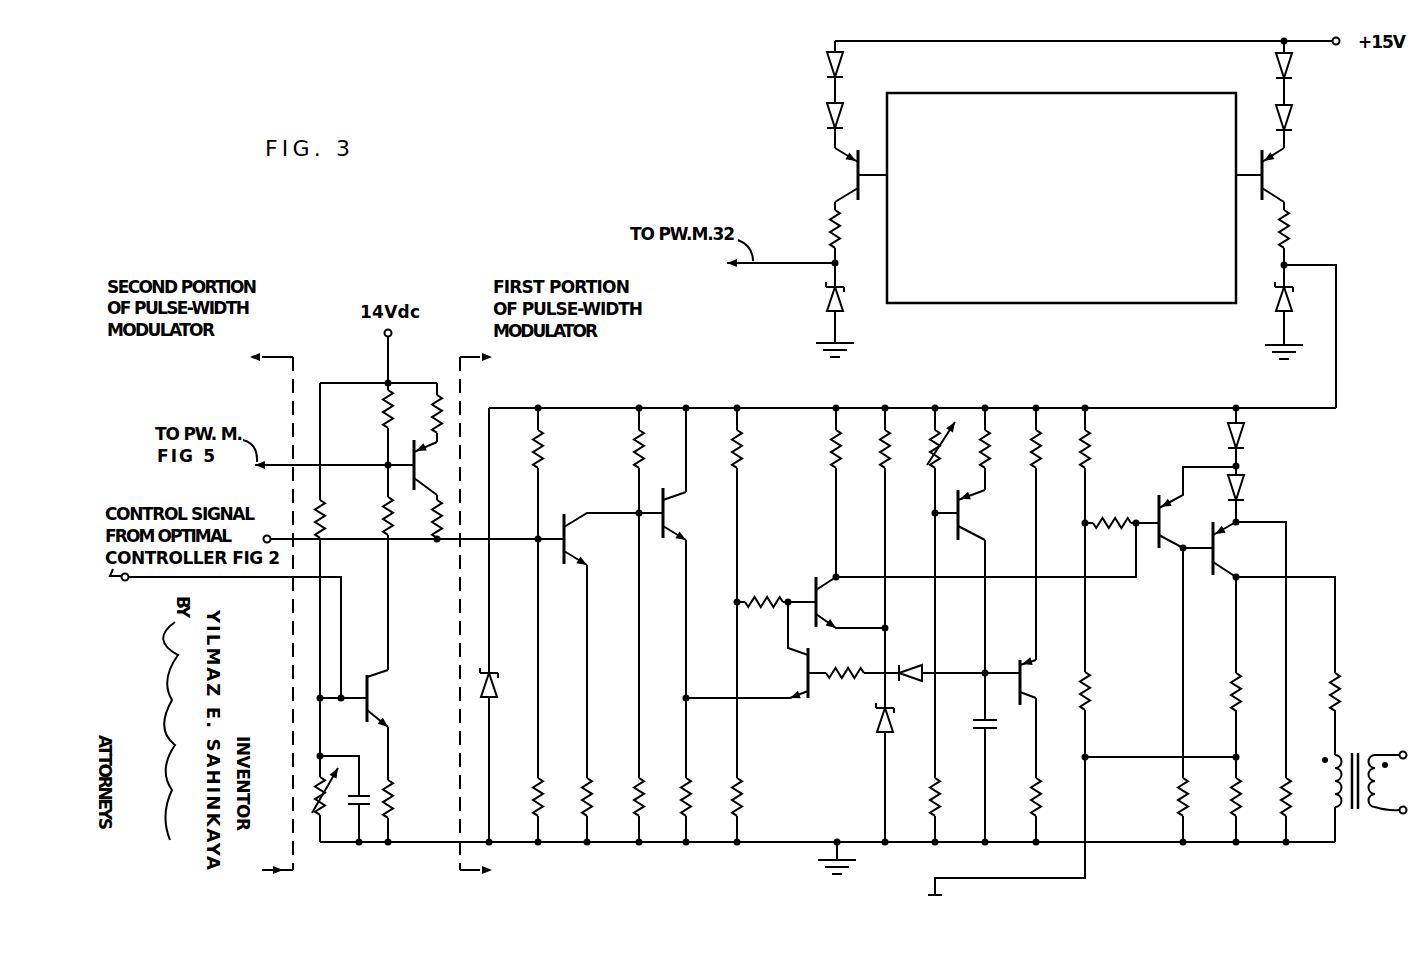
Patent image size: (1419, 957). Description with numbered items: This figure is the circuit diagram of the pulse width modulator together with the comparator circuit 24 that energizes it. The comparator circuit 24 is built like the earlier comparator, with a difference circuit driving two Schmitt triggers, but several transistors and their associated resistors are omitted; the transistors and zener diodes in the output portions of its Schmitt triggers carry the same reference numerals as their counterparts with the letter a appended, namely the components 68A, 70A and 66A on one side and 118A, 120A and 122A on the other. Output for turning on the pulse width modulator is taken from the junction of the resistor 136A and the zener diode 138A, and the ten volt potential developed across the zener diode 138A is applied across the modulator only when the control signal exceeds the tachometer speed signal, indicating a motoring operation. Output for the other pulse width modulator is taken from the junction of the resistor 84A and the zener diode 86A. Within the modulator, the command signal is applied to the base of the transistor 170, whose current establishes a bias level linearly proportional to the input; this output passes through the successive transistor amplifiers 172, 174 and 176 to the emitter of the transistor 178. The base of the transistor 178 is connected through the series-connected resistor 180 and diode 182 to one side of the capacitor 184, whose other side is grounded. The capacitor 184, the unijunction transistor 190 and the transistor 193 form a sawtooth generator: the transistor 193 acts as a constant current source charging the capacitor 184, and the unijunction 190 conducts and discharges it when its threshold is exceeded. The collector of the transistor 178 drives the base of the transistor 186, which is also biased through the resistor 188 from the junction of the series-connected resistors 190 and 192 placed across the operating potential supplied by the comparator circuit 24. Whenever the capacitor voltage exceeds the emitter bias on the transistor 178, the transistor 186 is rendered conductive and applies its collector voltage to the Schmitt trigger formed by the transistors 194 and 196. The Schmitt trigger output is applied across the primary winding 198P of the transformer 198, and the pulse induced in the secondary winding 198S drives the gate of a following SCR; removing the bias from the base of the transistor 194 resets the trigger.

The diode 68A is at (824, 58).
The diode 70A is at (824, 108).
The transistor 66A is at (850, 174).
The resistor 84A is at (828, 222).
The zener diode 86A is at (826, 292).
The diode 118A is at (1292, 60).
The diode 120A is at (1292, 110).
The transistor 122A is at (1272, 176).
The resistor 136A is at (1292, 224).
The zener diode 138A is at (1270, 303).
The comparator circuit 24 is at (1061, 198).
The transistor 170 is at (367, 756).
The transistor amplifier 172 is at (419, 467).
The transistor amplifier 174 is at (588, 540).
The transistor amplifier 176 is at (674, 515).
The transistor 178 is at (806, 675).
The resistor 180 is at (862, 660).
The diode 182 is at (918, 655).
The capacitor 184 is at (990, 736).
The transistor 186 is at (836, 604).
The resistor 188 is at (762, 583).
The unijunction transistor 190 is at (1021, 655).
The resistor 192 is at (750, 782).
The transistor 193 is at (965, 517).
The transistor 194 is at (1197, 507).
The transistor 196 is at (1222, 547).
The transformer 198 is at (1366, 747).
The primary winding 198P is at (1337, 752).
The secondary winding 198S is at (1371, 766).